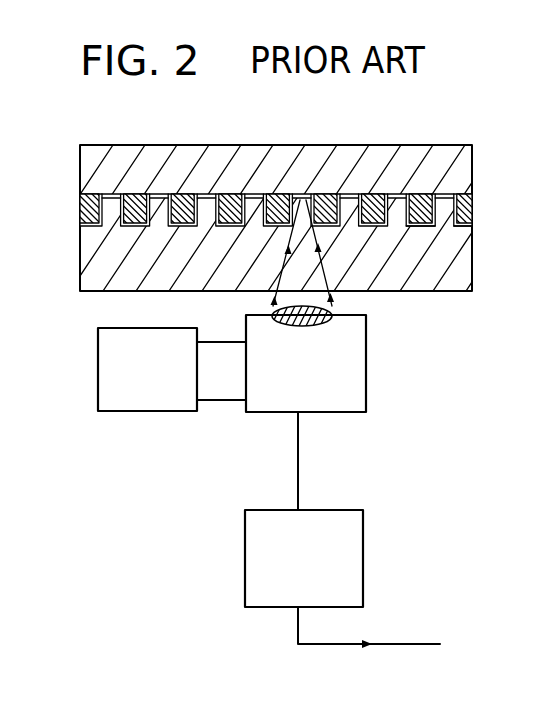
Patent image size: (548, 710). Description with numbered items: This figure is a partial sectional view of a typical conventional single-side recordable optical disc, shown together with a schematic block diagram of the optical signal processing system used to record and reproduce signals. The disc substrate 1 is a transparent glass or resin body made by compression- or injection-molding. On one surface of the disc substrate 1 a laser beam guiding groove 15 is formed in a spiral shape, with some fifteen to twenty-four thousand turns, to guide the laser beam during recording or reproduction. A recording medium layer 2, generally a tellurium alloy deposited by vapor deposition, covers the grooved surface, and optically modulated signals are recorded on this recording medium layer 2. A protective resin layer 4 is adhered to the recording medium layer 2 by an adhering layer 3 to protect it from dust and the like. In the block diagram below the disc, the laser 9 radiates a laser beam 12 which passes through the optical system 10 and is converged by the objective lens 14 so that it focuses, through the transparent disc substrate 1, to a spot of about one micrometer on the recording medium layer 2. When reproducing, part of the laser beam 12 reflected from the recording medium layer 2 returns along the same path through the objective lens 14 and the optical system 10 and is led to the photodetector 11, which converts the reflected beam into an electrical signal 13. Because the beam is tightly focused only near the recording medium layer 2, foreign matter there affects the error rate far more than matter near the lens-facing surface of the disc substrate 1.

The disc substrate 1 is at (470, 290).
The recording medium layer 2 is at (472, 222).
The adhering layer 3 is at (80, 204).
The protective resin layer 4 is at (230, 146).
The laser beam guiding groove 15 is at (443, 200).
The laser beam 12 is at (278, 282).
The objective lens 14 is at (334, 314).
The laser 9 is at (98, 364).
The optical system 10 is at (366, 388).
The photodetector 11 is at (363, 543).
The electrical signal 13 is at (395, 635).